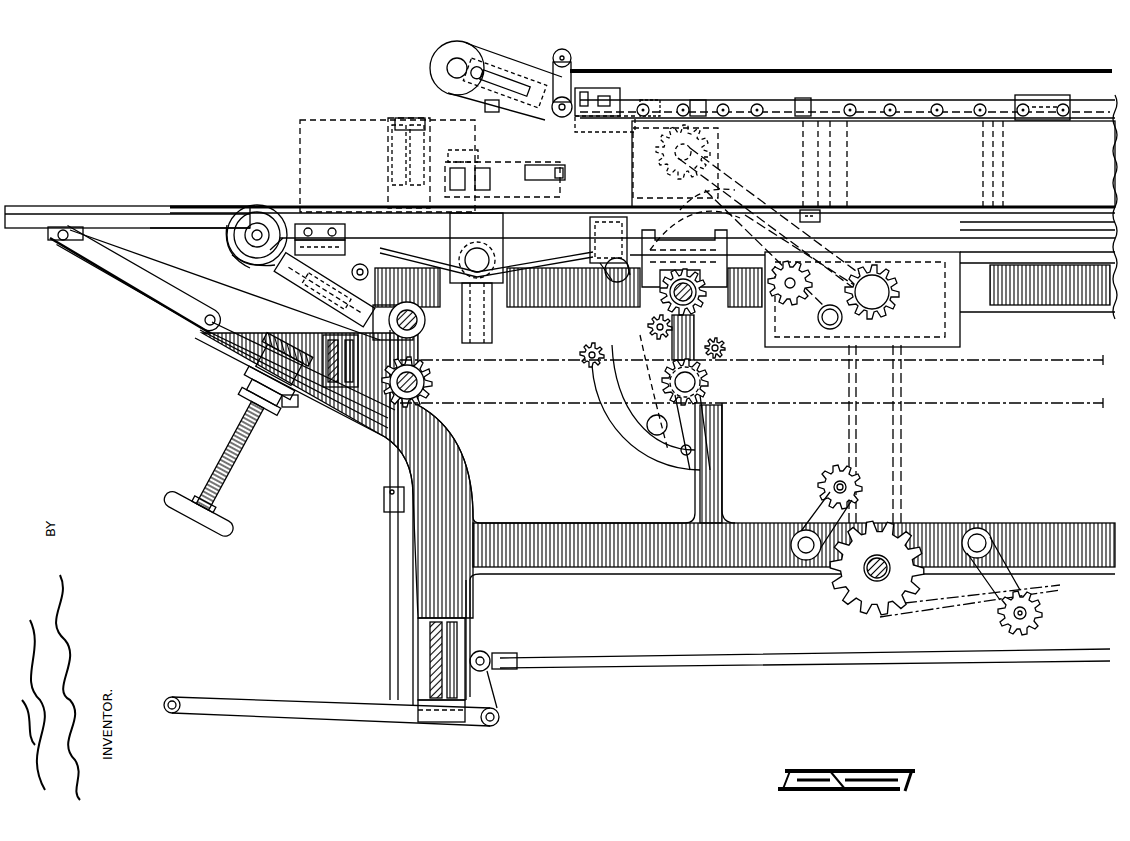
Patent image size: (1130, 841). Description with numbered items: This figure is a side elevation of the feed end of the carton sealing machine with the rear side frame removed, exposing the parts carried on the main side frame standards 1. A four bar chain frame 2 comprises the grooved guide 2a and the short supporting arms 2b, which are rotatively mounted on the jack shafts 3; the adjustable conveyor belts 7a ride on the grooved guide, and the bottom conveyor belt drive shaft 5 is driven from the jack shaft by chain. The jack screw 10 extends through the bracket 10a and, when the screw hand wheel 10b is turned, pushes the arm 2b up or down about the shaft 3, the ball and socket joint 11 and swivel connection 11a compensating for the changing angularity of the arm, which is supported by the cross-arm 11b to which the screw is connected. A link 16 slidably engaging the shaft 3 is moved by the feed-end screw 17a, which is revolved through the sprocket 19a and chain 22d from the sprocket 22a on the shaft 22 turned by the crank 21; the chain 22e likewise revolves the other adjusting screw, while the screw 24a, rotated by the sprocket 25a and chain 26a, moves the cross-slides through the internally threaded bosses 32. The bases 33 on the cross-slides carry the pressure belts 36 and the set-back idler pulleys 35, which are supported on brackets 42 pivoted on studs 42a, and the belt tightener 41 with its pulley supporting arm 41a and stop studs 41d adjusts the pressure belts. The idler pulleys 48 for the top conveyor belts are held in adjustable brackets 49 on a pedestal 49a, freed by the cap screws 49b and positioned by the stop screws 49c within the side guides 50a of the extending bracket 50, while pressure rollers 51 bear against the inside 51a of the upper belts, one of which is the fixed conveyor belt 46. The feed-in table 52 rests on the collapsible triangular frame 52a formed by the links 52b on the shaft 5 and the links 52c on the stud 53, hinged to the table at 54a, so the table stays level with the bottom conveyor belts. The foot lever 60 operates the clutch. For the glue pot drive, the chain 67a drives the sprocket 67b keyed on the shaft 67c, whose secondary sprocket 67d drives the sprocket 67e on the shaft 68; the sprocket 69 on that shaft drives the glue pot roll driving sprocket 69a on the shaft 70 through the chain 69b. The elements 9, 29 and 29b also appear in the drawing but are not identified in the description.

The main side frame standards 1 is at (455, 488).
The four bar chain frame 2 is at (333, 220).
The grooved guide 2a is at (345, 232).
The short supporting arms 2b is at (280, 262).
The jack shafts 3 is at (402, 314).
The bottom conveyor belt drive shaft 5 is at (258, 230).
The adjustable conveyor belts 7a is at (272, 212).
The link 9 is at (262, 250).
The jack screw 10 is at (232, 462).
The bracket 10a is at (292, 408).
The screw hand wheel 10b is at (172, 497).
The ball and socket joint 11 is at (248, 410).
The swivel connection 11a is at (265, 350).
The cross-arm 11b is at (324, 320).
The link 16 is at (425, 322).
The screw at the feed end 17a is at (418, 380).
The sprocket 19a is at (418, 392).
The crank 21 is at (708, 447).
The shaft 22 is at (700, 384).
The sprocket 22a is at (712, 370).
The chain 22d is at (556, 408).
The chain 22e is at (830, 405).
The screw 24a is at (662, 300).
The sprocket 25a is at (712, 300).
The chain 26a is at (722, 352).
The belt 29 is at (700, 212).
The belt guide 29b is at (700, 175).
The internally threaded bosses 32 is at (728, 262).
The bases 33 is at (812, 212).
The idler pulleys 35 is at (385, 168).
The pressure belts 36 is at (435, 125).
The adjustable belt tightener 41 is at (440, 183).
The pulley supporting arm 41a is at (478, 152).
The stop studs 41d is at (583, 168).
The brackets 42 is at (560, 172).
The studs 42a is at (605, 172).
The fixed conveyor belt 46 is at (835, 72).
The idler pulleys 48 is at (463, 50).
The adjustable brackets 49 is at (530, 78).
The pedestal 49a is at (647, 100).
The cap screws 49b is at (510, 70).
The stop screws 49c is at (588, 96).
The extending bracket 50 is at (593, 90).
The side guides 50a is at (503, 78).
The pressure rollers 51 is at (797, 105).
The inside of the upper belts 51a is at (505, 103).
The feed-in table 52 is at (90, 215).
The collapsible triangular frame 52a is at (112, 222).
The links 52b is at (147, 222).
The links 52c is at (160, 297).
The stud 53 is at (215, 330).
The hinge 54a is at (55, 237).
The foot lever 60 is at (240, 700).
The chain 67a is at (997, 523).
The sprocket 67b is at (907, 560).
The shaft 67c is at (868, 572).
The secondary sprocket 67d is at (880, 560).
The sprocket 67e is at (1036, 285).
The shaft 68 is at (882, 292).
The sprocket 69 is at (880, 268).
The glue pot roll driving sprocket 69a is at (712, 148).
The chain 69b is at (750, 185).
The shaft 70 is at (696, 100).